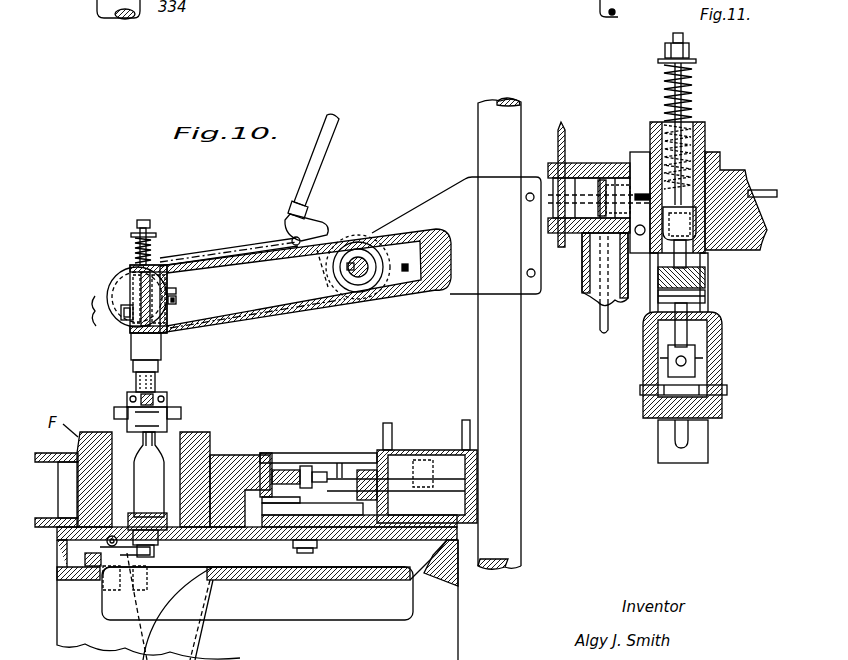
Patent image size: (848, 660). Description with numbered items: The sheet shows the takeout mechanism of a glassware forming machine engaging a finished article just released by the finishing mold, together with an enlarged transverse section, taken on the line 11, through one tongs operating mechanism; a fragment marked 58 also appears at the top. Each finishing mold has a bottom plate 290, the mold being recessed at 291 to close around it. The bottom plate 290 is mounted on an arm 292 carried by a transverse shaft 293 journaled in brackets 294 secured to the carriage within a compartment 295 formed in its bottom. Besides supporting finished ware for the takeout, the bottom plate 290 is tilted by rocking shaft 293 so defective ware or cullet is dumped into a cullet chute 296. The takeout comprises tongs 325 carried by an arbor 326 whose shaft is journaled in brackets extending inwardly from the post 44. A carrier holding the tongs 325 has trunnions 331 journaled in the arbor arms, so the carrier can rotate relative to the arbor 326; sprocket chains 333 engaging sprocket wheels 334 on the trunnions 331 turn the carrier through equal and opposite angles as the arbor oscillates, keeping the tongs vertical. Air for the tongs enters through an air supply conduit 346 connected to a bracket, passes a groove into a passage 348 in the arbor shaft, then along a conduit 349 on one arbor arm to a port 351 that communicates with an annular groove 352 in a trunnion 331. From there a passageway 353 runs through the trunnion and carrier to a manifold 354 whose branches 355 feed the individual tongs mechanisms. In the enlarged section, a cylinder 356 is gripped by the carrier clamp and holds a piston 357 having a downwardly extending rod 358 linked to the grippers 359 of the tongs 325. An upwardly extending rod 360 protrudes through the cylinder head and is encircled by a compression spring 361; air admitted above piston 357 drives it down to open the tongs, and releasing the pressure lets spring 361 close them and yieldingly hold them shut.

In FIG. 10, the section line 11— 11 is at (143, 222).
In FIG. 10, the post 44 is at (525, 367).
In FIG. 11, the bracket 58 is at (620, 8).
In FIG. 10, the bottom plate 290 is at (162, 530).
In FIG. 10, the recess 291 is at (196, 518).
In FIG. 10, the arm 292 is at (166, 606).
In FIG. 10, the transverse shaft 293 is at (107, 543).
In FIG. 10, the bracket 294 is at (97, 570).
In FIG. 10, the compartment 295 is at (302, 565).
In FIG. 10, the cullet chute 296 is at (200, 600).
In FIG. 10, the tongs 325 is at (158, 396).
In FIG. 11, the tongs 325 is at (636, 397).
In FIG. 10, the arbor 326 is at (268, 304).
In FIG. 11, the arbor 326 is at (584, 290).
In FIG. 10, the trunnion 331 is at (118, 280).
In FIG. 11, the trunnion 331 is at (585, 178).
In FIG. 10, the sprocket chain 333 is at (312, 233).
In FIG. 10, the sprocket wheel 334 is at (173, 312).
In FIG. 11, the sprocket wheel 334 is at (563, 135).
In FIG. 10, the air supply conduit 346 is at (407, 290).
In FIG. 10, the passage 348 is at (360, 262).
In FIG. 10, the conduit 349 is at (235, 252).
In FIG. 11, the conduit 349 is at (600, 316).
In FIG. 11, the port 351 is at (623, 182).
In FIG. 11, the annular groove 352 is at (612, 168).
In FIG. 11, the passageway 353 is at (622, 158).
In FIG. 10, the manifold 354 is at (173, 296).
In FIG. 11, the manifold 354 is at (752, 190).
In FIG. 10, the branch 355 is at (163, 268).
In FIG. 11, the branch 355 is at (730, 168).
In FIG. 11, the cylinder 356 is at (700, 296).
In FIG. 11, the piston 357 is at (700, 280).
In FIG. 11, the downwardly extending rod 358 is at (690, 326).
In FIG. 10, the gripper 359 is at (126, 425).
In FIG. 11, the gripper 359 is at (700, 440).
In FIG. 11, the upwardly extending rod 360 is at (688, 264).
In FIG. 11, the compression spring 361 is at (695, 76).